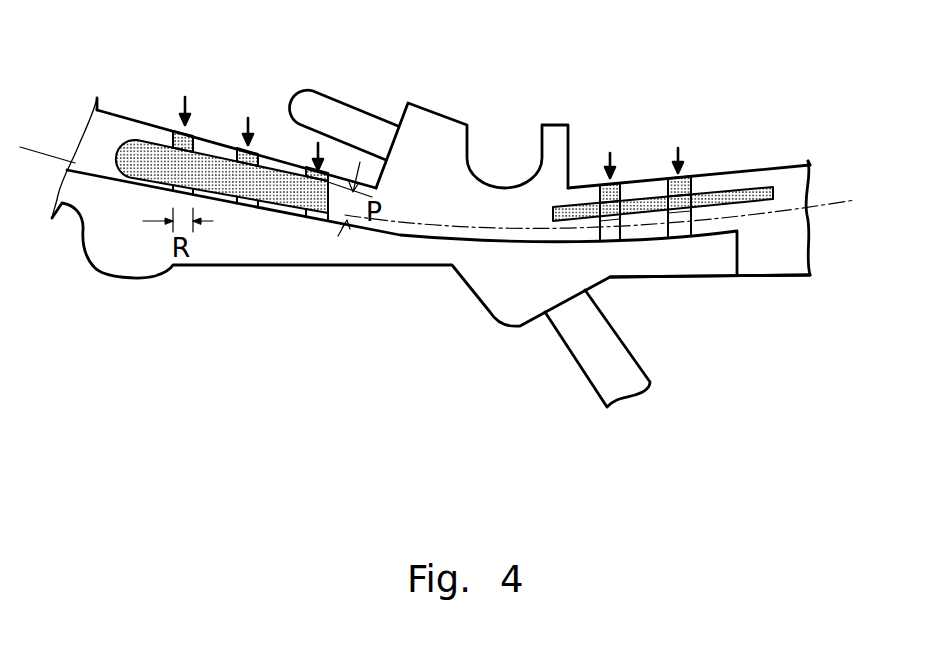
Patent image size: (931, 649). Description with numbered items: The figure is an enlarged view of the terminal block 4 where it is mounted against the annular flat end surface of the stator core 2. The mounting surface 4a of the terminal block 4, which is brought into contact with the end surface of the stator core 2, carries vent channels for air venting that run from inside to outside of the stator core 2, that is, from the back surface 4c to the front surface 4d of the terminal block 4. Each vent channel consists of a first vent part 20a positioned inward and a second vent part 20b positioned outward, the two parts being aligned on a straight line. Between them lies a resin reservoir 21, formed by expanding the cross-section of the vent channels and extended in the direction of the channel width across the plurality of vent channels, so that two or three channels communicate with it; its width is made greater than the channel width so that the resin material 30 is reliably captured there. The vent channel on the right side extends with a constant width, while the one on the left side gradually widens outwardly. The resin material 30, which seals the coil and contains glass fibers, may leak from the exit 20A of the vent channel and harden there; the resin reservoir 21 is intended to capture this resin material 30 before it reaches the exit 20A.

The stator core 2 is at (825, 207).
The terminal block 4 is at (555, 90).
The mounting surface 4a is at (117, 127).
The back surface 4c is at (738, 173).
The front surface 4d is at (670, 277).
The first vent part 20a is at (208, 143).
The second vent part 20b is at (198, 196).
The exit of the vent channel 20A is at (247, 214).
The resin reservoir 21 is at (135, 170).
The resin material 30 is at (153, 148).